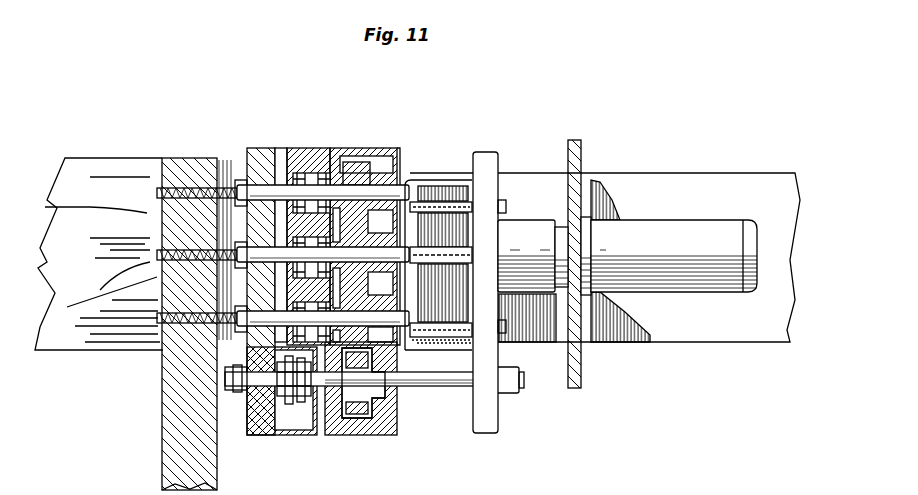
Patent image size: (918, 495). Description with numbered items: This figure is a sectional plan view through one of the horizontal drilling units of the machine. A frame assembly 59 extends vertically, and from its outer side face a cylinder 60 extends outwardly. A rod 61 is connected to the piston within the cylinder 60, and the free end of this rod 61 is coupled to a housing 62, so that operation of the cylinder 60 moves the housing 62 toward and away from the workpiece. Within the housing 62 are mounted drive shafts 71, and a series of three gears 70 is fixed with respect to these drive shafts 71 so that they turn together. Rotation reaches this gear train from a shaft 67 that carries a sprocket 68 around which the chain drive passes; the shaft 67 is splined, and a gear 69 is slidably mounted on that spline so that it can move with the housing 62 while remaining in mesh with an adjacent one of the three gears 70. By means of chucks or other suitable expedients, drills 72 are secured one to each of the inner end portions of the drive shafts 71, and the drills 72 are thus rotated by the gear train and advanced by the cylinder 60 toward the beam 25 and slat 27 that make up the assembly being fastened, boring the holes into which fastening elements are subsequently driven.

The beam 25 is at (163, 402).
The slat 27 is at (87, 162).
The frame assembly 59 is at (582, 157).
The cylinder 60 is at (700, 230).
The rod 61 is at (430, 247).
The housing 62 is at (305, 150).
The shaft 67 is at (437, 387).
The sprocket 68 is at (295, 405).
The gear 69 is at (357, 408).
The gears 70 is at (353, 160).
The drive shaft 71 is at (260, 188).
The drill 72 is at (163, 197).